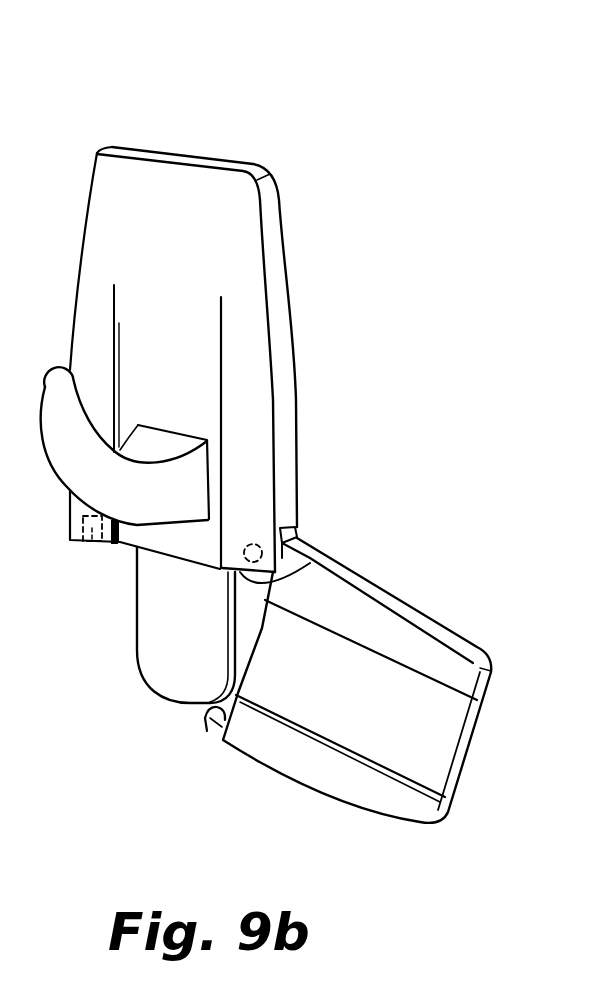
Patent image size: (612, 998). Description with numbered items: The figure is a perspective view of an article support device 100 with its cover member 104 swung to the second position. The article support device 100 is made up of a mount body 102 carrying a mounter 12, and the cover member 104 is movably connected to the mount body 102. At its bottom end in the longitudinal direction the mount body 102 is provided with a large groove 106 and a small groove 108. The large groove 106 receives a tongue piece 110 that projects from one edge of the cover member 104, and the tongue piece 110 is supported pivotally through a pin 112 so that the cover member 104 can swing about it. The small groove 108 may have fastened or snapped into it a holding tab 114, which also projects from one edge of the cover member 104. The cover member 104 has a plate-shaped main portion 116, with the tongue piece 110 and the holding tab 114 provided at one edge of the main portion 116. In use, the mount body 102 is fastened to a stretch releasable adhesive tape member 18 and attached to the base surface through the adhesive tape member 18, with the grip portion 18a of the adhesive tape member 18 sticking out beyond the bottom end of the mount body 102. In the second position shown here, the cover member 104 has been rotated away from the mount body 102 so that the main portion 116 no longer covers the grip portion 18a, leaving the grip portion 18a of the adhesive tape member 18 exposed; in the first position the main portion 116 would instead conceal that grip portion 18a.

The article support device 100 is at (230, 116).
The mount body 102 is at (233, 213).
The cover member 104 is at (363, 627).
The large groove 106 is at (297, 530).
The small groove 108 is at (88, 547).
The tongue piece 110 is at (310, 563).
The pin 112 is at (256, 536).
The holding tab 114 is at (210, 732).
The main portion 116 is at (347, 727).
The mounter 12 is at (60, 392).
The adhesive tape member 18 is at (136, 607).
The grip portion 18a is at (167, 652).